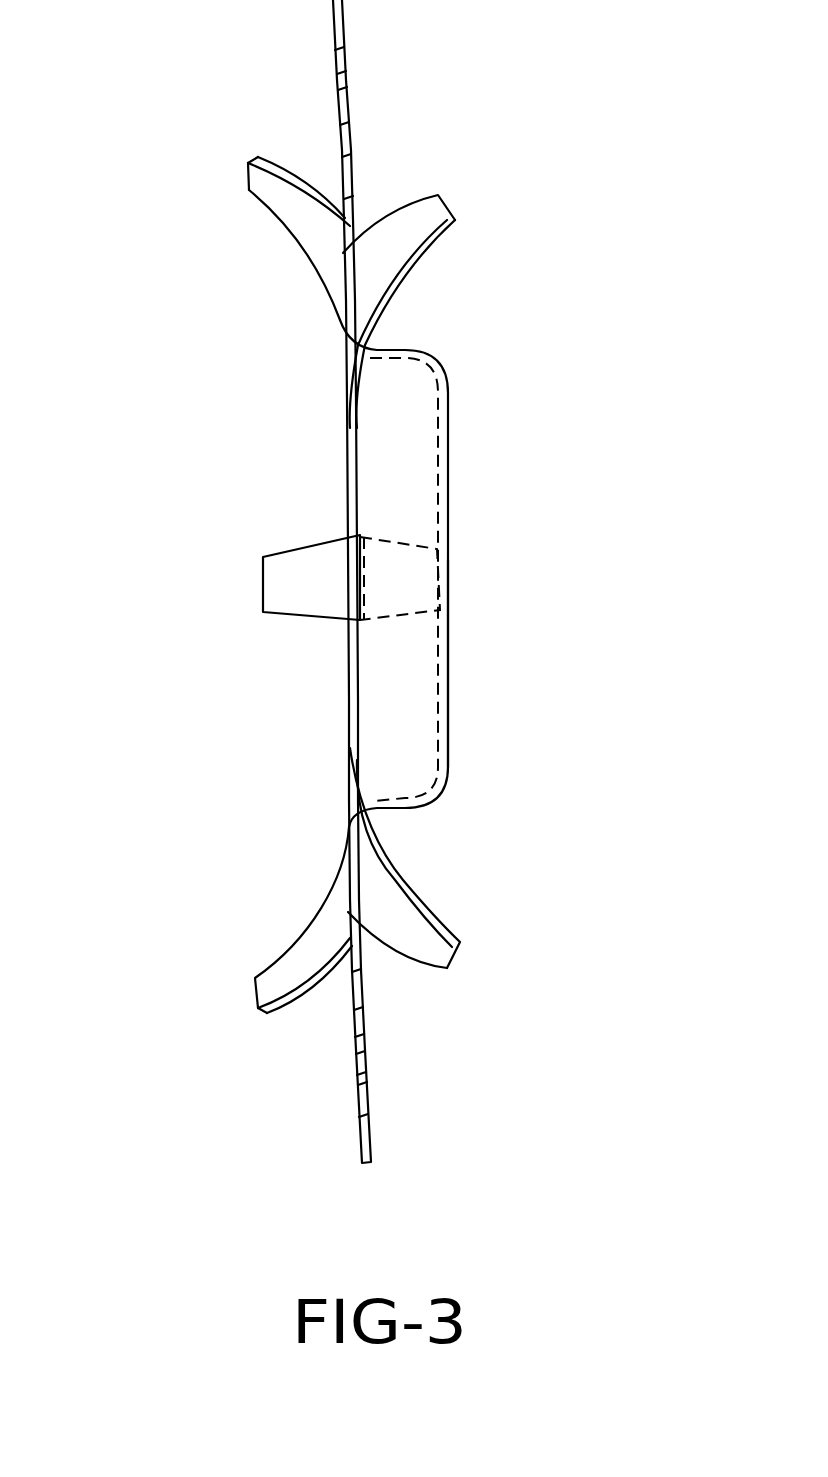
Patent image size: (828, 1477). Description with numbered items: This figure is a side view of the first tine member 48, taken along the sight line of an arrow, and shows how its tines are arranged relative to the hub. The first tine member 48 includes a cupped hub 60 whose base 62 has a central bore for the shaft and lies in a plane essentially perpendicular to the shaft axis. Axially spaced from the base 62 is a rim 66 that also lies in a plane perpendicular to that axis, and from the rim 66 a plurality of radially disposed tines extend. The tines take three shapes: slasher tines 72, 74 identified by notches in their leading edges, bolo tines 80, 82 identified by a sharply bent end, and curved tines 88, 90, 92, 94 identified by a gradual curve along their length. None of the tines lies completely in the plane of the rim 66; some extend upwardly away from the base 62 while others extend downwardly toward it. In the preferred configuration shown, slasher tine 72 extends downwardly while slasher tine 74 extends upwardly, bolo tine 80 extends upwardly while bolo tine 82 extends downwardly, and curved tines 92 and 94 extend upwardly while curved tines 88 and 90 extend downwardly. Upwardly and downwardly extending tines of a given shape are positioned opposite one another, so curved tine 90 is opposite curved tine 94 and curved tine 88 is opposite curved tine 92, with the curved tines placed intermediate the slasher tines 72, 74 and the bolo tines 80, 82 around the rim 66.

The first tine member 48 is at (160, 1064).
The cupped hub 60 is at (422, 427).
The base 62 is at (449, 708).
The rim 66 is at (348, 729).
The slasher tine 72 is at (362, 1084).
The slasher tine 74 is at (344, 57).
The bolo tine 80 is at (308, 603).
The bolo tine 82 is at (407, 560).
The curved tine 88 is at (407, 930).
The curved tine 90 is at (416, 222).
The curved tine 92 is at (258, 180).
The curved tine 94 is at (323, 935).